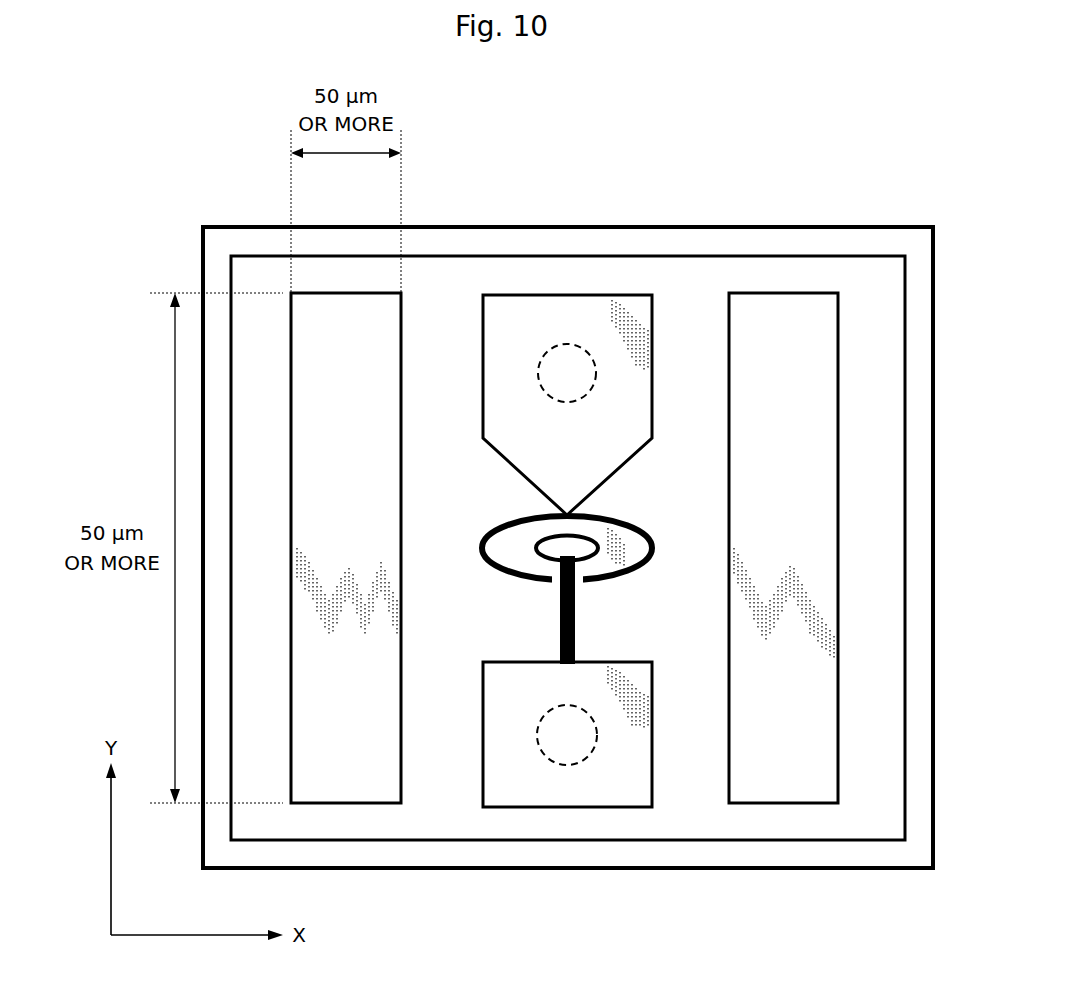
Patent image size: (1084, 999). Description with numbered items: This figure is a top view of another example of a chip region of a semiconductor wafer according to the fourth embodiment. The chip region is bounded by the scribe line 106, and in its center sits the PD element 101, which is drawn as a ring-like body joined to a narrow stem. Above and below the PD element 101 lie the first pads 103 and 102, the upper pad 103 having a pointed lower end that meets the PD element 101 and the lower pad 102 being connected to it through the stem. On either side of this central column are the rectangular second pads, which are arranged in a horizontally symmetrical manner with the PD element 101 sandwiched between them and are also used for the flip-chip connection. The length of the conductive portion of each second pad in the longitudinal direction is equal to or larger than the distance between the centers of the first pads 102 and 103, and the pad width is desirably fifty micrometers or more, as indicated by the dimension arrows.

The PD element 101 is at (628, 522).
The first pad 102 is at (569, 807).
The first pad 103 is at (567, 295).
The scribe line 106 is at (897, 227).